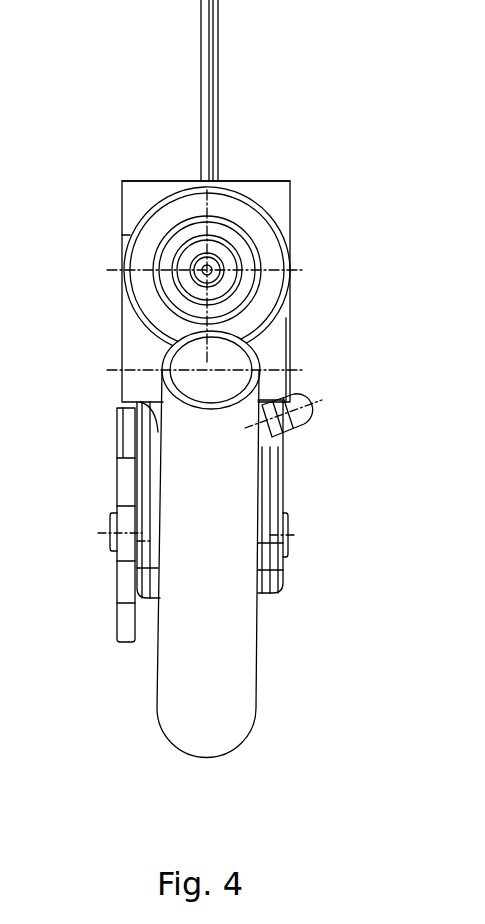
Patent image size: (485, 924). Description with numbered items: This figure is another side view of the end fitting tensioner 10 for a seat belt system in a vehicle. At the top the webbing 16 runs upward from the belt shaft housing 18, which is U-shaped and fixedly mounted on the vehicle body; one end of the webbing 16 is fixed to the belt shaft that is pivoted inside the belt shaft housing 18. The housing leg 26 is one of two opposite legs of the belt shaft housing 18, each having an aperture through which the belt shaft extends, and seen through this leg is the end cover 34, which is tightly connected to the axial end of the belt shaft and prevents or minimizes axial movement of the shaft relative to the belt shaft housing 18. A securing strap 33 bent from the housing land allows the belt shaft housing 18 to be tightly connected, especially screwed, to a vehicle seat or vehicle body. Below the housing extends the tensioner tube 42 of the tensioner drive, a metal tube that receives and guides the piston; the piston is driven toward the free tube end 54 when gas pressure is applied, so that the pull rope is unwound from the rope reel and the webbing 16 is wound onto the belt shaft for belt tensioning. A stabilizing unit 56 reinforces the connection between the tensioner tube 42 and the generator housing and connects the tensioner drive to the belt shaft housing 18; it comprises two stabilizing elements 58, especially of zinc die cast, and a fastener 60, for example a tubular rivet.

The end fitting tensioner 10 is at (211, 379).
The webbing 16 is at (214, 103).
The belt shaft housing 18 is at (140, 350).
The housing leg 26 is at (132, 198).
The securing strap 33 is at (123, 590).
The end cover 34 is at (268, 258).
The tensioner tube 42 is at (237, 687).
The free tube end 54 is at (237, 361).
The stabilizing unit 56 is at (287, 594).
The stabilizing element 58 is at (145, 496).
The fastener 60 is at (112, 547).